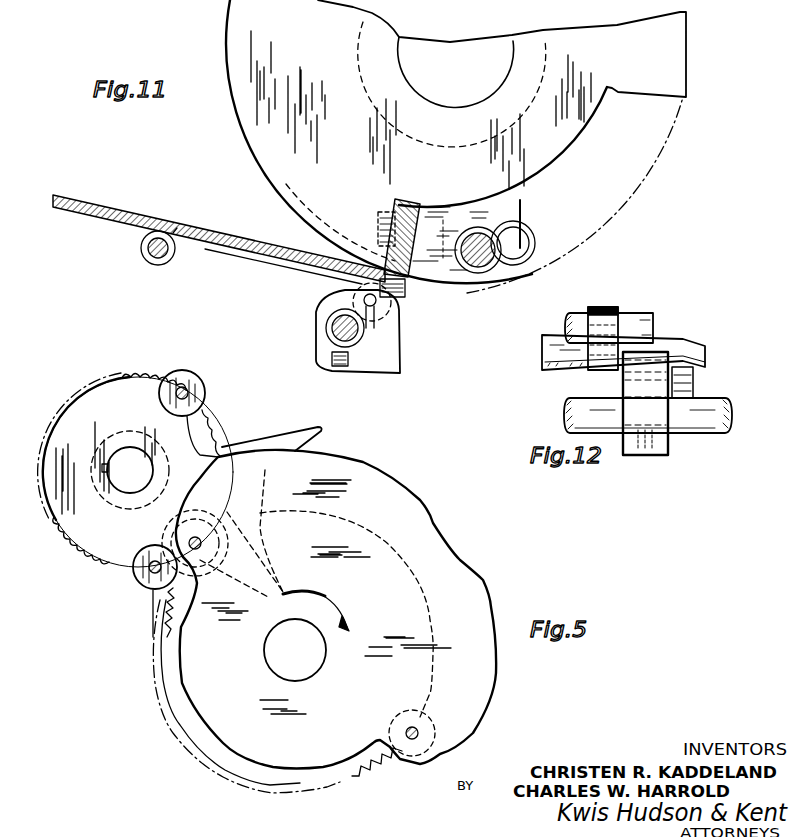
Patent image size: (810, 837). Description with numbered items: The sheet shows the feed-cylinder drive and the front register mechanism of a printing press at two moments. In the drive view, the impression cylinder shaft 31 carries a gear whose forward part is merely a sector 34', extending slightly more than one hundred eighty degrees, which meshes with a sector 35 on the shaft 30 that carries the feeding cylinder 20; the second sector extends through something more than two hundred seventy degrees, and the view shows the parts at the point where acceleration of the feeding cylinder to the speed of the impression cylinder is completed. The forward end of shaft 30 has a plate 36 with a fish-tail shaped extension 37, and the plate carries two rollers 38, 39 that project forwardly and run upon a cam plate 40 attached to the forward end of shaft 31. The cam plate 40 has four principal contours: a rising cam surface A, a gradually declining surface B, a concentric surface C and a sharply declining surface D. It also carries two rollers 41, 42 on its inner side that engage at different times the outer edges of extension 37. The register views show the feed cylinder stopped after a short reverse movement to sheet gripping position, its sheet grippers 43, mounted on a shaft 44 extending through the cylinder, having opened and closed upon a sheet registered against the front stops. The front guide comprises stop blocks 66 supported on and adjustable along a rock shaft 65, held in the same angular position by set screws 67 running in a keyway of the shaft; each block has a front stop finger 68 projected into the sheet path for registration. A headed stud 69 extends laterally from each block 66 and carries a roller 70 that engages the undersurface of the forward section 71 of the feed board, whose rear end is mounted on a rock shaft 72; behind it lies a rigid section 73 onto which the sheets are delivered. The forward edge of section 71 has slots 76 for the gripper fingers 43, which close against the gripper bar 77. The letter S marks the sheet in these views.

In FIG. 11, the feeding cylinder 20 is at (235, 106).
In FIG. 5, the shaft 30 is at (148, 480).
In FIG. 5, the shaft 31 is at (318, 668).
In FIG. 5, the sector 34' is at (369, 782).
In FIG. 5, the sector 35 is at (138, 382).
In FIG. 5, the plate 36 is at (96, 403).
In FIG. 5, the extension 37 is at (278, 444).
In FIG. 5, the roller 38 is at (147, 592).
In FIG. 5, the roller 39 is at (203, 390).
In FIG. 5, the cam plate 40 is at (467, 593).
In FIG. 5, the roller 41 is at (243, 574).
In FIG. 5, the roller 42 is at (428, 737).
In FIG. 11, the sheet grippers 43 is at (467, 293).
In FIG. 12, the sheet grippers 43 is at (619, 309).
In FIG. 12, the shaft 44 is at (653, 318).
In FIG. 11, the rock shaft 65 is at (330, 333).
In FIG. 12, the rock shaft 65 is at (730, 399).
In FIG. 11, the stop blocks 66 is at (391, 367).
In FIG. 12, the stop blocks 66 is at (623, 456).
In FIG. 11, the set screws 67 is at (338, 368).
In FIG. 11, the front stop finger 68 is at (410, 303).
In FIG. 12, the front stop finger 68 is at (637, 367).
In FIG. 11, the headed stud 69 is at (376, 318).
In FIG. 12, the headed stud 69 is at (695, 378).
In FIG. 11, the roller 70 is at (378, 288).
In FIG. 12, the roller 70 is at (694, 395).
In FIG. 11, the forward section 71 is at (316, 276).
In FIG. 12, the forward section 71 is at (697, 363).
In FIG. 11, the rock shaft 72 is at (160, 266).
In FIG. 11, the rigid section 73 is at (99, 216).
In FIG. 11, the slots 76 is at (427, 305).
In FIG. 12, the slots 76 is at (583, 373).
In FIG. 11, the gripper bar 77 is at (378, 214).
In FIG. 5, the rising cam surface A is at (477, 733).
In FIG. 5, the gradually declining surface B is at (467, 560).
In FIG. 5, the concentric surface C is at (346, 591).
In FIG. 5, the sharply declining surface D is at (201, 536).
In FIG. 11, the bar S is at (232, 241).
In FIG. 12, the bar S is at (685, 342).